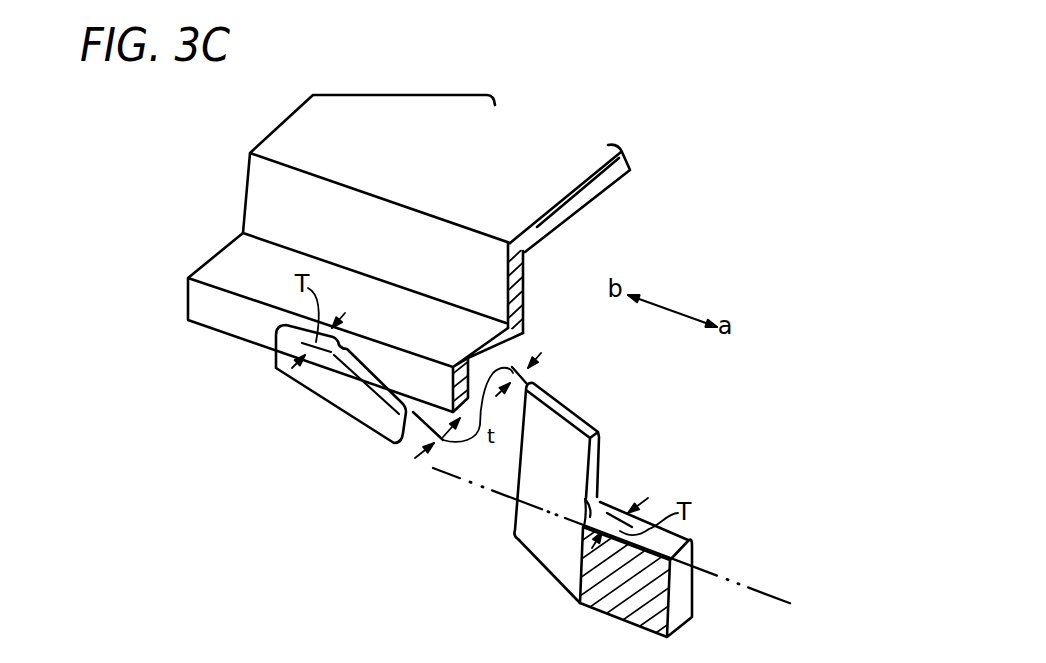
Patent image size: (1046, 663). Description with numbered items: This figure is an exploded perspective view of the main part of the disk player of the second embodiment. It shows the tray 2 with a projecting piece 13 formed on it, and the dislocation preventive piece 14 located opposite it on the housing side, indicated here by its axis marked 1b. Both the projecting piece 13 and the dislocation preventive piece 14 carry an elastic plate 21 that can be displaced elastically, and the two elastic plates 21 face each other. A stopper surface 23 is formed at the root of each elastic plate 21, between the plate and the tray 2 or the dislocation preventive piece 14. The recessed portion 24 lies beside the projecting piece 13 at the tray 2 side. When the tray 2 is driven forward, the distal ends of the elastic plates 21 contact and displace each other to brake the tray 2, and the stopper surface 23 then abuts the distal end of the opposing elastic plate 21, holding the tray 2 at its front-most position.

The tray 2 is at (270, 198).
The substantially V-shaped recessed portion 24 is at (403, 375).
The projecting piece 13 is at (302, 387).
The elastic plate 21 is at (370, 410).
The stopper surface 23 is at (343, 350).
The dislocation preventive piece 14 is at (628, 498).
The axis of shaft (1) 1b is at (763, 588).